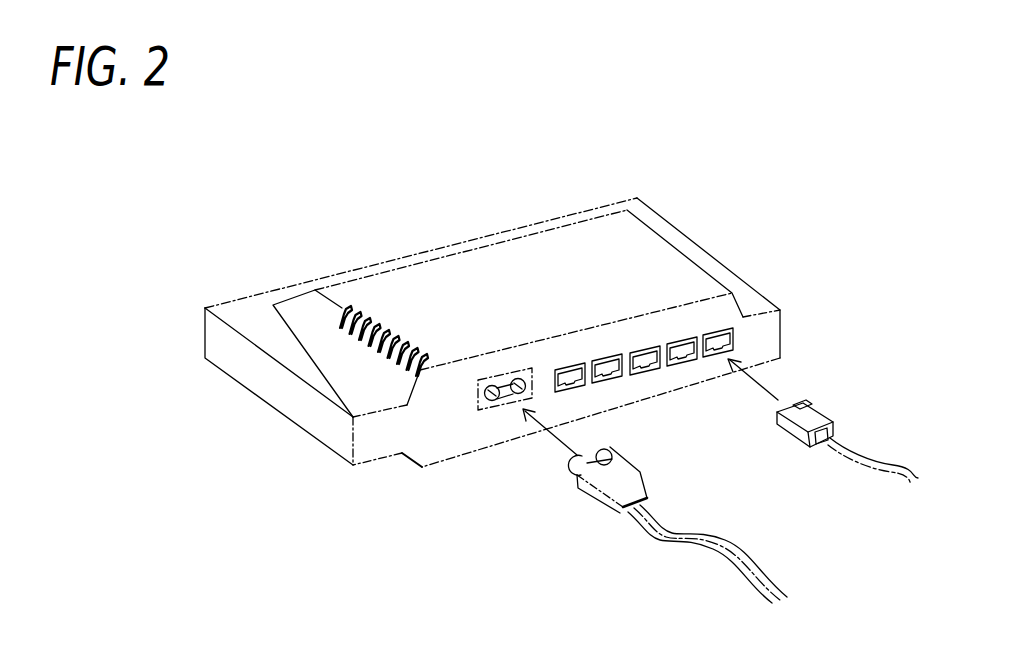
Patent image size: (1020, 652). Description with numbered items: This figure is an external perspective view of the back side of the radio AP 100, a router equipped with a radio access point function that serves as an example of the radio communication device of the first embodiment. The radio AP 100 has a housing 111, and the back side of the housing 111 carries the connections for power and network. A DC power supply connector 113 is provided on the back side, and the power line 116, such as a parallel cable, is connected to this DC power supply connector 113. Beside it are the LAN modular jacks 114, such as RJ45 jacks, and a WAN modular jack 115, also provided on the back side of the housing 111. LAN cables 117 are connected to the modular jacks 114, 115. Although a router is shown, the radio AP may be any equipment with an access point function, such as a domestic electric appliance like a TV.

The radio AP 100 is at (474, 197).
The housing 111 is at (492, 332).
The DC power supply connector 113 is at (499, 433).
The LAN modular jacks 114 is at (578, 393).
The WAN modular jack 115 is at (740, 341).
The power cable plug 116 is at (662, 545).
The LAN cables 117 is at (830, 463).